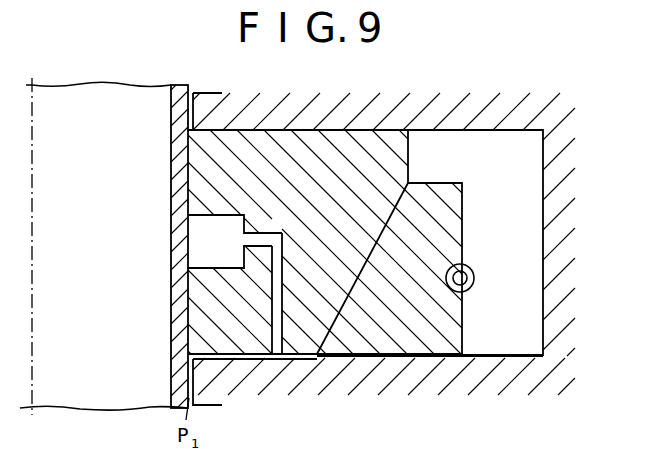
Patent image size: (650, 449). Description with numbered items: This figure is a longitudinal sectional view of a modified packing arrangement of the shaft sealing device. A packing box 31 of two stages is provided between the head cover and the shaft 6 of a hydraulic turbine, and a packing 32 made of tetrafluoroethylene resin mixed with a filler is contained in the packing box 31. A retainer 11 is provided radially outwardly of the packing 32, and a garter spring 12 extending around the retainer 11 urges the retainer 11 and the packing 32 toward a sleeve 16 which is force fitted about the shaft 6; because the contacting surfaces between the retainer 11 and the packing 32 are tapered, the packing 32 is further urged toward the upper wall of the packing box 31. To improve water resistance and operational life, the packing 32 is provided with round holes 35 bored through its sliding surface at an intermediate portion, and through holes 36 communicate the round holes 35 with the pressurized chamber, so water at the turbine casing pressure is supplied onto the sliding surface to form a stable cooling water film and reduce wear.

The shaft 6 is at (109, 112).
The sleeve 16 is at (181, 325).
The packing 32 is at (201, 163).
The packing box 31 is at (548, 214).
The retainer 11 is at (452, 316).
The round holes 35 is at (206, 268).
The through holes 36 is at (279, 352).
The garter spring 12 is at (474, 278).